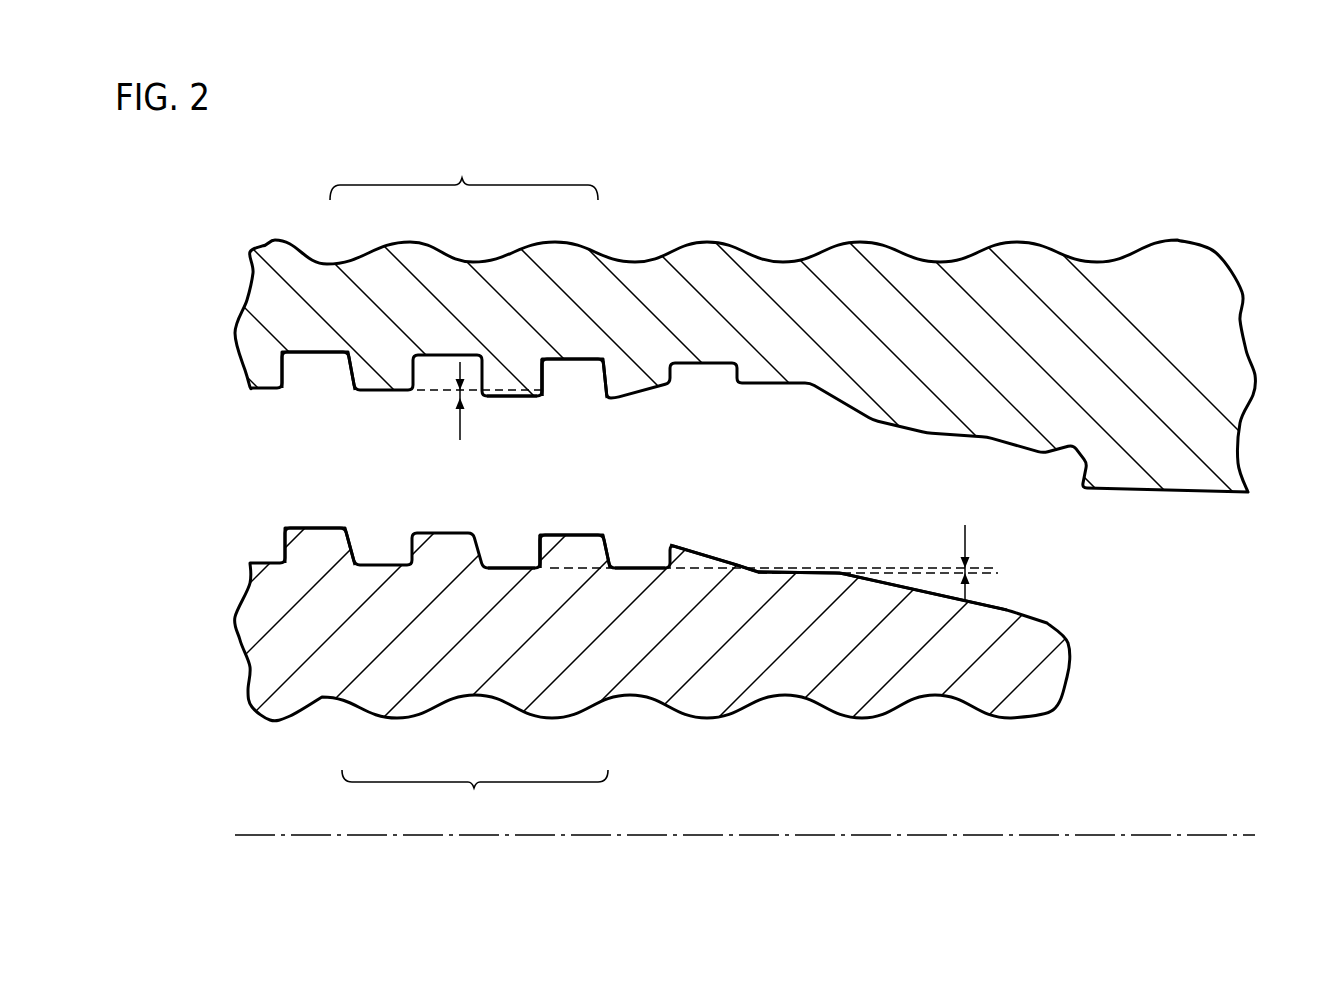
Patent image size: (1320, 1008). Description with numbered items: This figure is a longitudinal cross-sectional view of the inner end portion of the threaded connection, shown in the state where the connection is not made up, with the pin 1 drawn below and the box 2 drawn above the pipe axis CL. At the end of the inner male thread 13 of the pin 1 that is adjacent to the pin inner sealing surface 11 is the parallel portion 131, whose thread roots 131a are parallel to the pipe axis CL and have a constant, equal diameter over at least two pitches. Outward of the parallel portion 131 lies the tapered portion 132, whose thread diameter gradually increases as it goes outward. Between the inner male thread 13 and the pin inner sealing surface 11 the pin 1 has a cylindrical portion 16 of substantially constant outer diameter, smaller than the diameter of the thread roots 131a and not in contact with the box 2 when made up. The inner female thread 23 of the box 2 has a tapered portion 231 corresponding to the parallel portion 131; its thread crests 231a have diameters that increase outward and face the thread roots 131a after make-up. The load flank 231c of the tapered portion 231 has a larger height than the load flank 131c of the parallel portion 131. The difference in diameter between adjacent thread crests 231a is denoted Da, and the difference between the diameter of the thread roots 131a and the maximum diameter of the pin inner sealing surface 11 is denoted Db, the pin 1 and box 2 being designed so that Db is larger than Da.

The pin 1 is at (226, 640).
The box 2 is at (228, 297).
The pin inner sealing surface 11 is at (943, 607).
The inner male thread 13 is at (475, 794).
The cylindrical portion 16 is at (793, 575).
The parallel portion 131 is at (580, 577).
The thread roots 131a is at (507, 565).
The load flank 131c is at (542, 557).
The tapered portion 132 is at (363, 575).
The inner female thread 23 is at (464, 175).
The tapered portion 231 is at (573, 350).
The thread crests 231a is at (527, 399).
The load flank 231c is at (548, 380).
The difference in diameter between adjacent thread crests Da is at (481, 403).
The difference between thread root diameter and maximum sealing surface diameter Db is at (778, 557).
The pipe axis CL is at (759, 835).